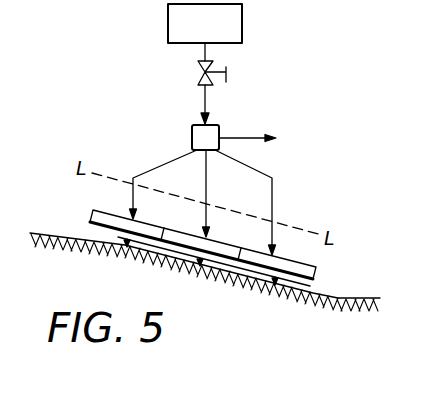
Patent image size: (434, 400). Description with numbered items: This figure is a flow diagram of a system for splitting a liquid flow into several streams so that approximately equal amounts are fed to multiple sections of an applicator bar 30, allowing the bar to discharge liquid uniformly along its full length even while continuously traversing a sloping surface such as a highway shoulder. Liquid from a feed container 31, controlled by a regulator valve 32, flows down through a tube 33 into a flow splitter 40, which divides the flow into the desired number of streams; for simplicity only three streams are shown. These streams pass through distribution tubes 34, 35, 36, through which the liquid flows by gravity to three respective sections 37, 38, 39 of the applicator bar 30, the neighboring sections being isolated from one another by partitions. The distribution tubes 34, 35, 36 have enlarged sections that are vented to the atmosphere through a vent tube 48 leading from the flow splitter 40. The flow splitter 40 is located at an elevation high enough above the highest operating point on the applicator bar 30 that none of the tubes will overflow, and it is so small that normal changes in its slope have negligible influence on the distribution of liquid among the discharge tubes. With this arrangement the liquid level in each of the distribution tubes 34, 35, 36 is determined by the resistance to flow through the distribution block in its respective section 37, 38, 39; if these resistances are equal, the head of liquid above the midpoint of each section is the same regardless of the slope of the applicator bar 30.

The applicator bar 30 is at (317, 275).
The feed container 31 is at (168, 20).
The regulator valve 32 is at (198, 70).
The tube 33 is at (205, 100).
The distribution tube 34 is at (165, 165).
The distribution tube 35 is at (207, 184).
The distribution tube 36 is at (254, 170).
The section of applicator bar 37 is at (149, 223).
The section of applicator bar 38 is at (215, 243).
The section of applicator bar 39 is at (280, 258).
The flow splitter 40 is at (192, 137).
The vent tube 48 is at (248, 137).